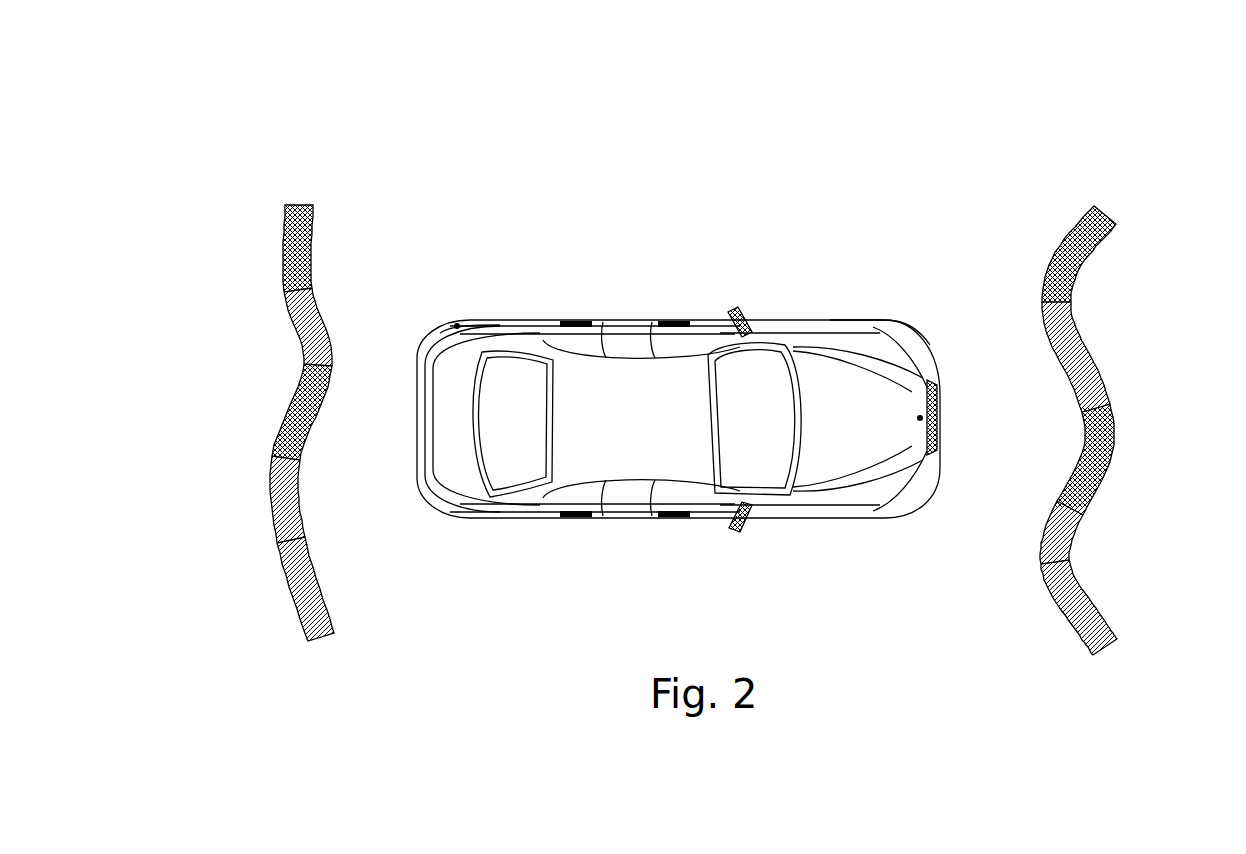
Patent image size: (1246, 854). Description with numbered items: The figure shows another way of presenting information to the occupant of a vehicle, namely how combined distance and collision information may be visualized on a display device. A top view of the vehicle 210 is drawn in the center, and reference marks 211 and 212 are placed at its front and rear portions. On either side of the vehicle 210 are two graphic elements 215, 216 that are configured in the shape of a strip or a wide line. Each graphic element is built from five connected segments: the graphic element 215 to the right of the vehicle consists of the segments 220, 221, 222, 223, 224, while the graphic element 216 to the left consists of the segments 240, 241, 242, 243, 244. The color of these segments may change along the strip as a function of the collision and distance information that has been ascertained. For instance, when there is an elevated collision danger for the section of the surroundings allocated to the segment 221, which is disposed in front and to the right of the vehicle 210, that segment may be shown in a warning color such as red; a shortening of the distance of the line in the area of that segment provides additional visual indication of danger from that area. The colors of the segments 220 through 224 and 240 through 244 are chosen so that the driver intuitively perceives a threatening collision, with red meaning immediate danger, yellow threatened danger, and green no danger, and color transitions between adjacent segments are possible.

The vehicle 210 is at (606, 378).
The front portion of vehicle 211 is at (858, 320).
The rear portion of vehicle 212 is at (458, 324).
The graphic element 215 is at (1100, 197).
The graphic element 216 is at (305, 202).
The segment 220 is at (1087, 603).
The segment 221 is at (1073, 540).
The segment 222 is at (1113, 466).
The segment 223 is at (1105, 360).
The segment 224 is at (1078, 287).
The segment 240 is at (293, 598).
The segment 241 is at (268, 500).
The segment 242 is at (298, 412).
The segment 243 is at (293, 343).
The segment 244 is at (285, 262).